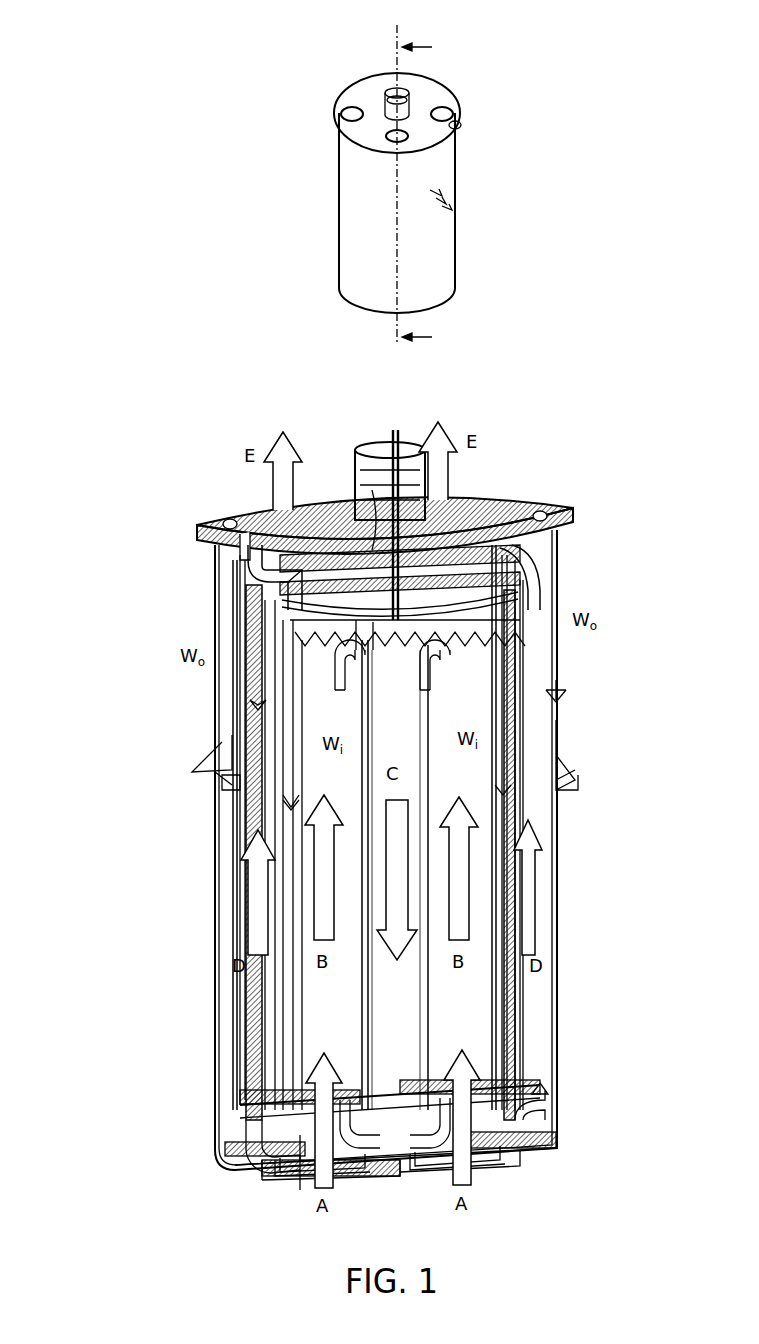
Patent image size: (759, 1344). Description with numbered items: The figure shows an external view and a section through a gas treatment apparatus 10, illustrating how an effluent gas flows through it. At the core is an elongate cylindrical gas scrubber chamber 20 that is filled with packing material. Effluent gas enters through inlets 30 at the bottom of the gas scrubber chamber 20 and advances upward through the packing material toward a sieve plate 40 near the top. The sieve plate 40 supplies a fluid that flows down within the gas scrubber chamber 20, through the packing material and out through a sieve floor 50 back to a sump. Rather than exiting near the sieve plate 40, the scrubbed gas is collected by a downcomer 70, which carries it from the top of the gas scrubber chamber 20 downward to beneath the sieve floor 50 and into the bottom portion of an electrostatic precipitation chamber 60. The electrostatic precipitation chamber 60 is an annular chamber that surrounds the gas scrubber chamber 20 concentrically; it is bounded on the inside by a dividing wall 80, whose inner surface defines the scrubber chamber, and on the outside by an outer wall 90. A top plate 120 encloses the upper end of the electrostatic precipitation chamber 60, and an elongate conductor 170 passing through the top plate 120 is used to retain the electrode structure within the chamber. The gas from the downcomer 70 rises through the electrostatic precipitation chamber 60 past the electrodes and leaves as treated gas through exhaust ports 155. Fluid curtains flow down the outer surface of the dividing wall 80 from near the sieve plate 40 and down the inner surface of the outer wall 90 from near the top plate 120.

The gas treatment apparatus 10 is at (138, 44).
The gas scrubber chamber 20 is at (482, 1020).
The inlets 30 is at (314, 1180).
The sieve plate 40 is at (236, 608).
The sieve floor 50 is at (265, 1092).
The electrostatic precipitation chamber 60 is at (540, 562).
The downcomer 70 is at (378, 724).
The dividing wall 80 is at (293, 1036).
The outer wall 90 is at (338, 255).
The top plate 120 is at (343, 105).
The exhaust ports 155 is at (458, 112).
The elongate conductor 170 is at (385, 445).